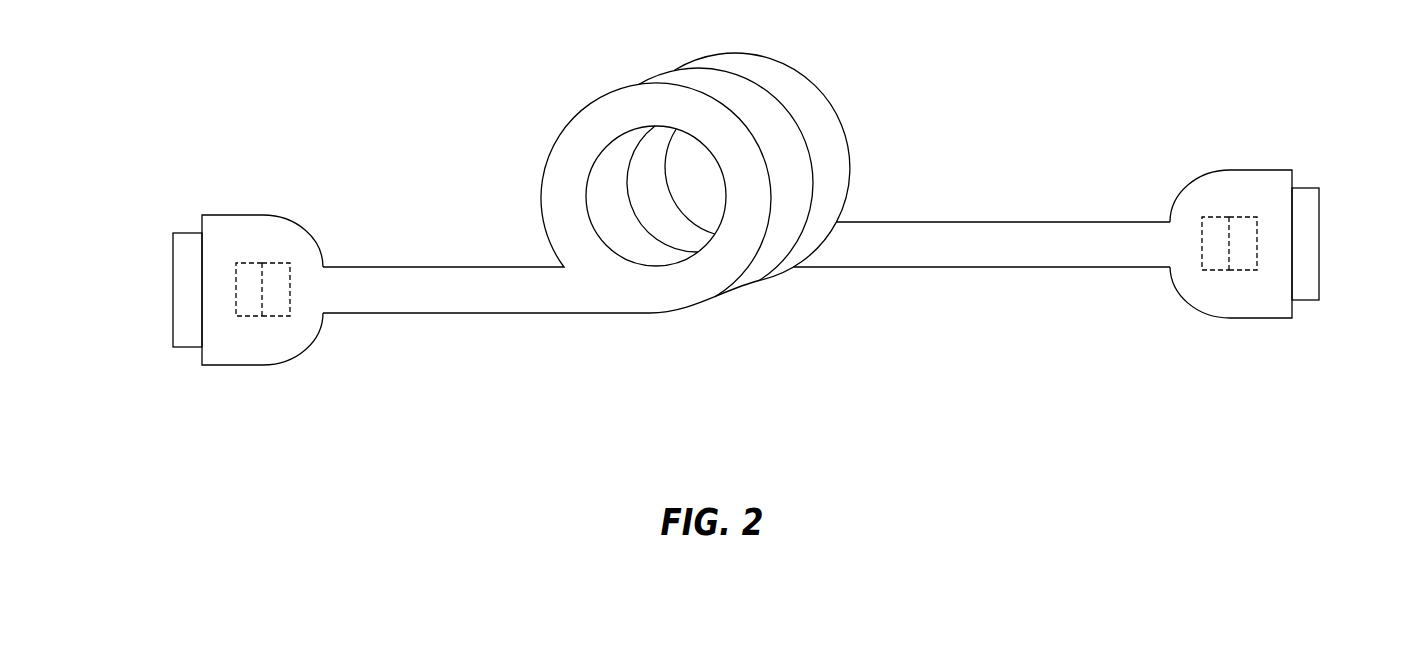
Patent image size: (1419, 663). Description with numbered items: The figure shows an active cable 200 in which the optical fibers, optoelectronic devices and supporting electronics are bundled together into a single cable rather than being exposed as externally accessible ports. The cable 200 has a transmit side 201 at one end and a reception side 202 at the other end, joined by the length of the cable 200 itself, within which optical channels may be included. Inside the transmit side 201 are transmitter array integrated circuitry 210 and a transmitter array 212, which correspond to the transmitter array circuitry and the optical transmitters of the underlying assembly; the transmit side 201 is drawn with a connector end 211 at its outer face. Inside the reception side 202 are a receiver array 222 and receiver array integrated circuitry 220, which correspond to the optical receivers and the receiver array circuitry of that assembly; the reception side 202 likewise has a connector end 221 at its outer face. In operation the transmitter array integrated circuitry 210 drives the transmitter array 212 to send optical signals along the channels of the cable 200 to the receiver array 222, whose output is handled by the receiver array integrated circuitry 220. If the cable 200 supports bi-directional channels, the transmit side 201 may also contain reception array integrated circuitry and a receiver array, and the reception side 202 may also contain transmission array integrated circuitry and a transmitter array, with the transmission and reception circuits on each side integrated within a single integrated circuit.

The active cable 200 is at (971, 127).
The transmit side 201 is at (238, 264).
The reception side 202 is at (1277, 224).
The transmitter array integrated circuitry 210 is at (250, 317).
The transmitter array 212 is at (273, 317).
The plug portion of first connector 211 is at (187, 348).
The receiver array integrated circuitry 220 is at (1243, 271).
The receiver array 222 is at (1217, 271).
The plug portion of second connector 221 is at (1302, 300).